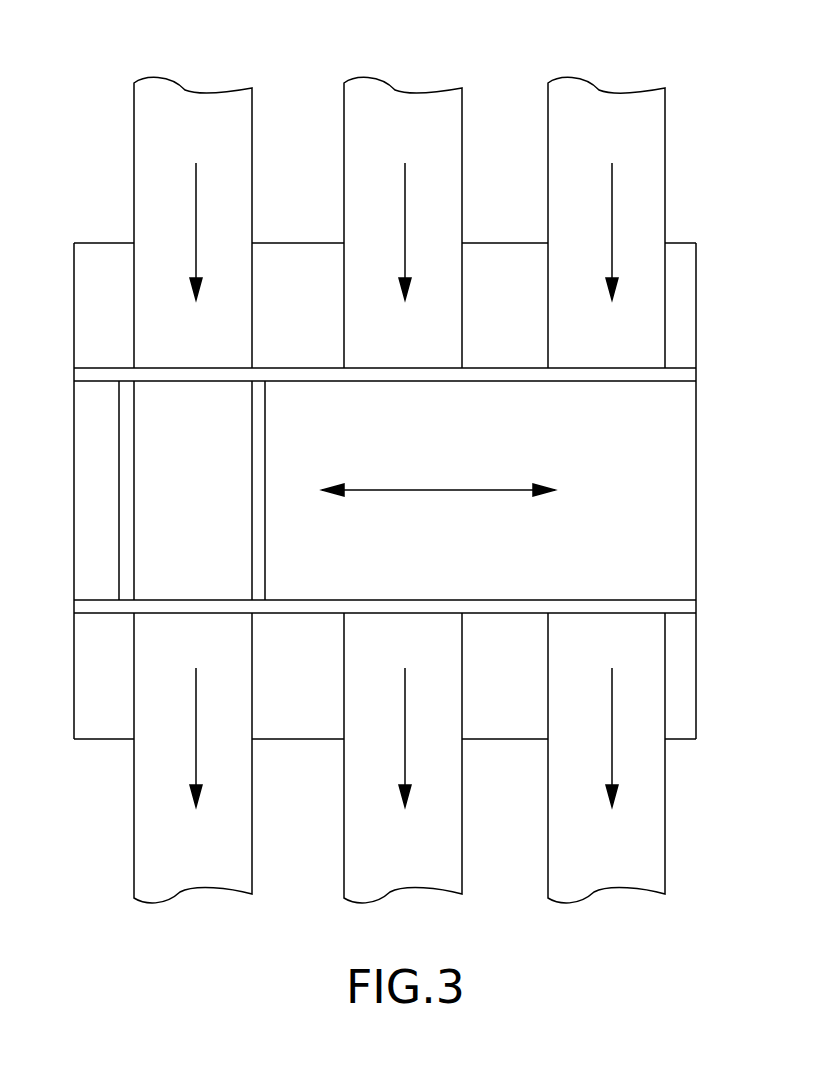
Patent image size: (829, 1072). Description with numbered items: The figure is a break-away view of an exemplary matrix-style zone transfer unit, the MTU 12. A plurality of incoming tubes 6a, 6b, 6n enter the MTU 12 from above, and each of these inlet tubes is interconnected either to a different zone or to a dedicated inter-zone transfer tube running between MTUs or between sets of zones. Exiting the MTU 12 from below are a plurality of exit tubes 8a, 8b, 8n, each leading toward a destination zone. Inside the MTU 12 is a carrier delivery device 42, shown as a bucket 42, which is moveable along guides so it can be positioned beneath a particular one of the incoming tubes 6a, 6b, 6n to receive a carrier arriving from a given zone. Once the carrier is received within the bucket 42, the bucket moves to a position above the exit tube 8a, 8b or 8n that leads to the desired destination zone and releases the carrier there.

The MTU 12 is at (705, 700).
The carrier delivery device 42 is at (119, 487).
The incoming tube 6a is at (252, 193).
The incoming tube 6b is at (462, 193).
The incoming tube 6n is at (665, 193).
The exit tube 8a is at (252, 787).
The exit tube 8b is at (462, 787).
The exit tube 8n is at (665, 787).